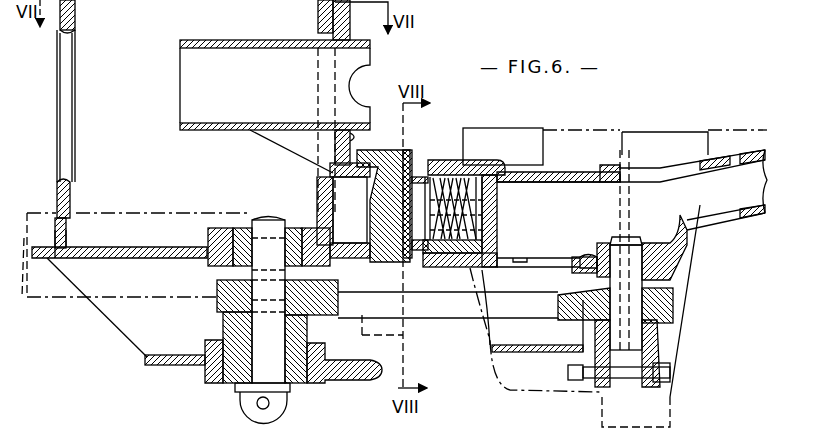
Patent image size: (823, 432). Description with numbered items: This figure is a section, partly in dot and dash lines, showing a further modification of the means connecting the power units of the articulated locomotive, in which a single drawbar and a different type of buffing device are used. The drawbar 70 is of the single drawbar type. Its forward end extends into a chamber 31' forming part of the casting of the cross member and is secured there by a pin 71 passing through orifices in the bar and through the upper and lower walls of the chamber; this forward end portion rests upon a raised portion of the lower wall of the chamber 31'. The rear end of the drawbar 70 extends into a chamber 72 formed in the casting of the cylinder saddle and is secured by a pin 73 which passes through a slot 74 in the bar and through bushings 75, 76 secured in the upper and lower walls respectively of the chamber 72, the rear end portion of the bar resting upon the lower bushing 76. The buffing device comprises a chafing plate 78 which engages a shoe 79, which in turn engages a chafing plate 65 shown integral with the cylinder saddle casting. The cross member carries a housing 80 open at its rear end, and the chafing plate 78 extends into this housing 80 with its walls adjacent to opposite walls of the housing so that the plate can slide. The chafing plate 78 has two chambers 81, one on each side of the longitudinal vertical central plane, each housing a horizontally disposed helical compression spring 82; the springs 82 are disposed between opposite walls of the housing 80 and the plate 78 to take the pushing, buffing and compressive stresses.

The chamber 31' is at (558, 223).
The chafing plate 65 is at (317, 177).
The drawbar 70 is at (438, 305).
The pin 71 is at (618, 240).
The chamber 72 is at (222, 273).
The pin 73 is at (273, 332).
The slot 74 is at (292, 292).
The bushing 75 is at (245, 226).
The bushing 76 is at (232, 386).
The chafing plate 78 is at (413, 205).
The shoe 79 is at (390, 150).
The housing 80 is at (467, 166).
The chamber 81 is at (420, 262).
The helical compression spring 82 is at (465, 210).